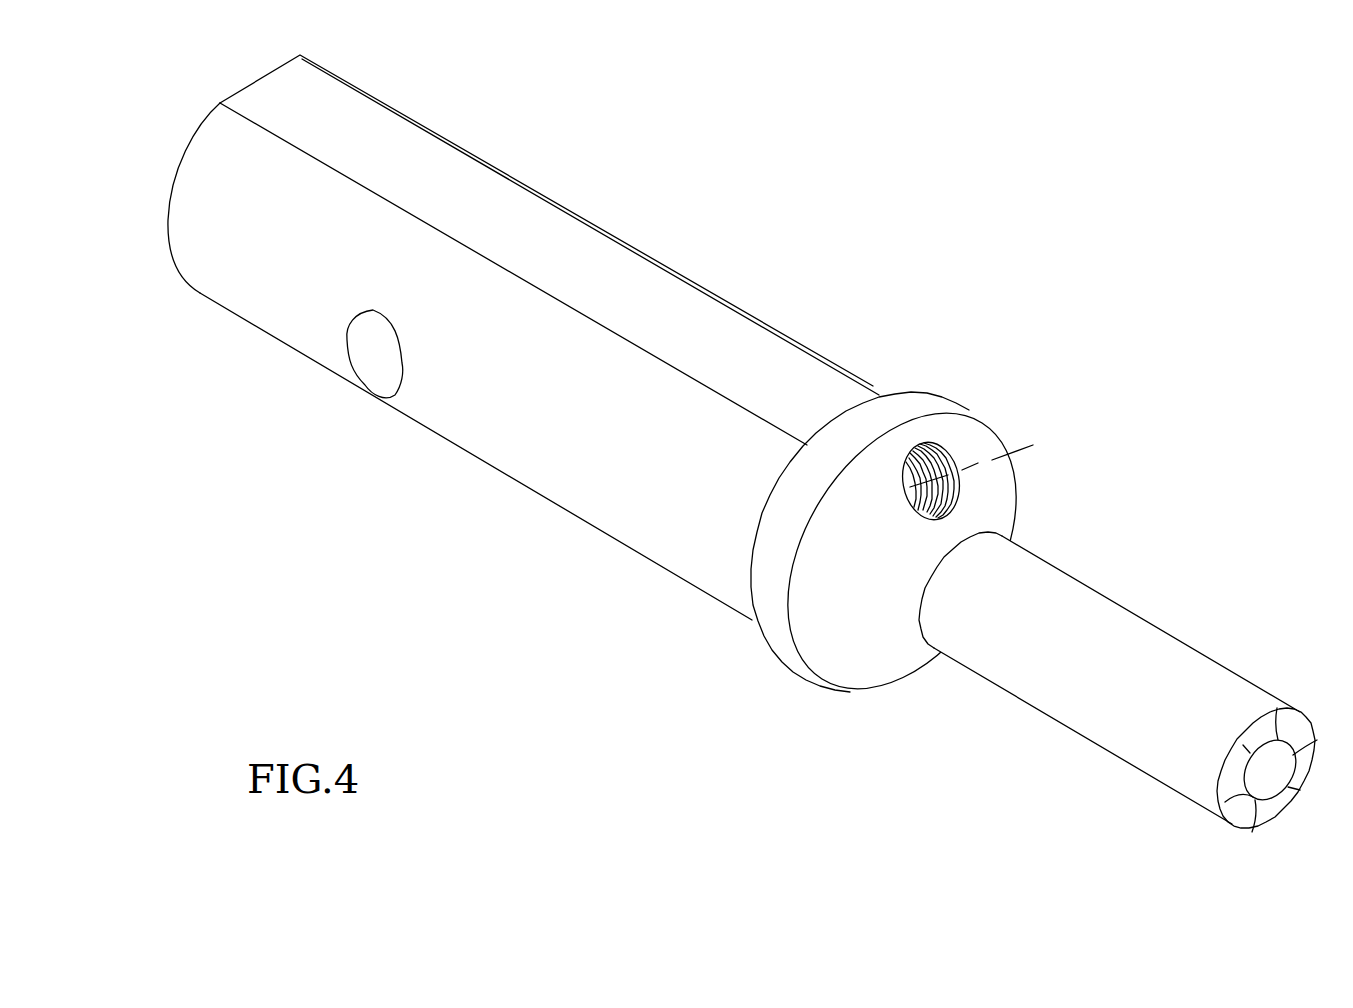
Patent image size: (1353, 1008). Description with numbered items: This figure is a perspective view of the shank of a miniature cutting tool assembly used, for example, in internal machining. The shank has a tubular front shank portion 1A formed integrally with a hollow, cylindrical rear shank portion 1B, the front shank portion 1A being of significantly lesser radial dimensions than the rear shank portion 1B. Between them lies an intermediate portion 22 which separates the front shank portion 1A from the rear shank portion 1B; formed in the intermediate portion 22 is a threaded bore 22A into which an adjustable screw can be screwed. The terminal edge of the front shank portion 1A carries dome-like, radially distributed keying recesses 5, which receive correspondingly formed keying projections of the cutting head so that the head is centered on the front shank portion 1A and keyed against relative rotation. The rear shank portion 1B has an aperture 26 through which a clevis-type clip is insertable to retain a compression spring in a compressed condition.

The front shank portion 1A is at (1080, 602).
The rear shank portion 1B is at (515, 217).
The keying recesses 5 is at (1237, 813).
The intermediate portion 22 is at (865, 657).
The threaded bore 22A is at (937, 447).
The aperture 26 is at (375, 352).